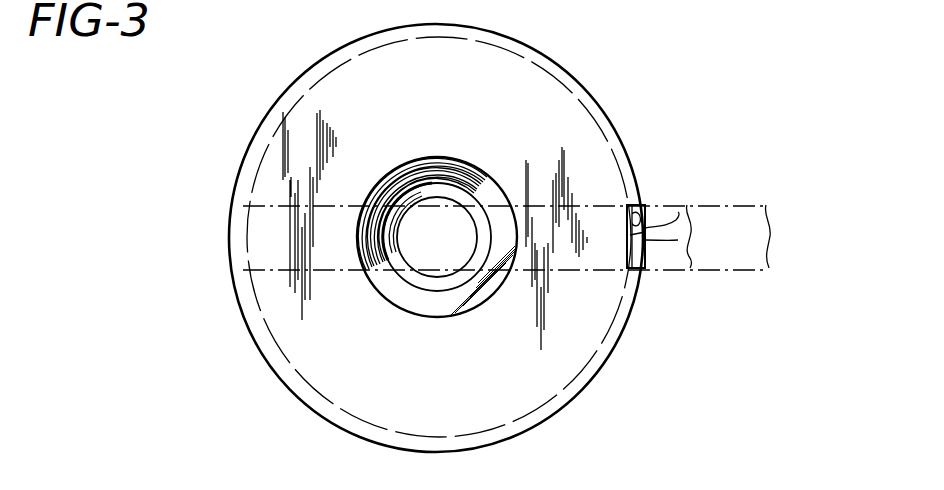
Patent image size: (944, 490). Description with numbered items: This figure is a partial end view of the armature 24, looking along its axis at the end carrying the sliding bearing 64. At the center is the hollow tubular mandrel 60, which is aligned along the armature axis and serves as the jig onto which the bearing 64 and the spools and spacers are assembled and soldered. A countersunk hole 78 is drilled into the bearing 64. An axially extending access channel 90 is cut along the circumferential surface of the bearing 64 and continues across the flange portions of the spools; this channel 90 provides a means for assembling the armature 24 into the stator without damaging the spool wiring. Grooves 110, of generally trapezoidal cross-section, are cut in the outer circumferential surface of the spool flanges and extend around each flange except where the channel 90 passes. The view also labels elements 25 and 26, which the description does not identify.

The armature 24 is at (423, 228).
The grooves 110 is at (350, 60).
The sliding bearing 64 is at (578, 100).
The access channel 90 is at (643, 218).
The lead wires 26 is at (672, 270).
The cable 25 is at (746, 270).
The countersunk hole 78 is at (402, 303).
The tubular mandrel 60 is at (442, 283).